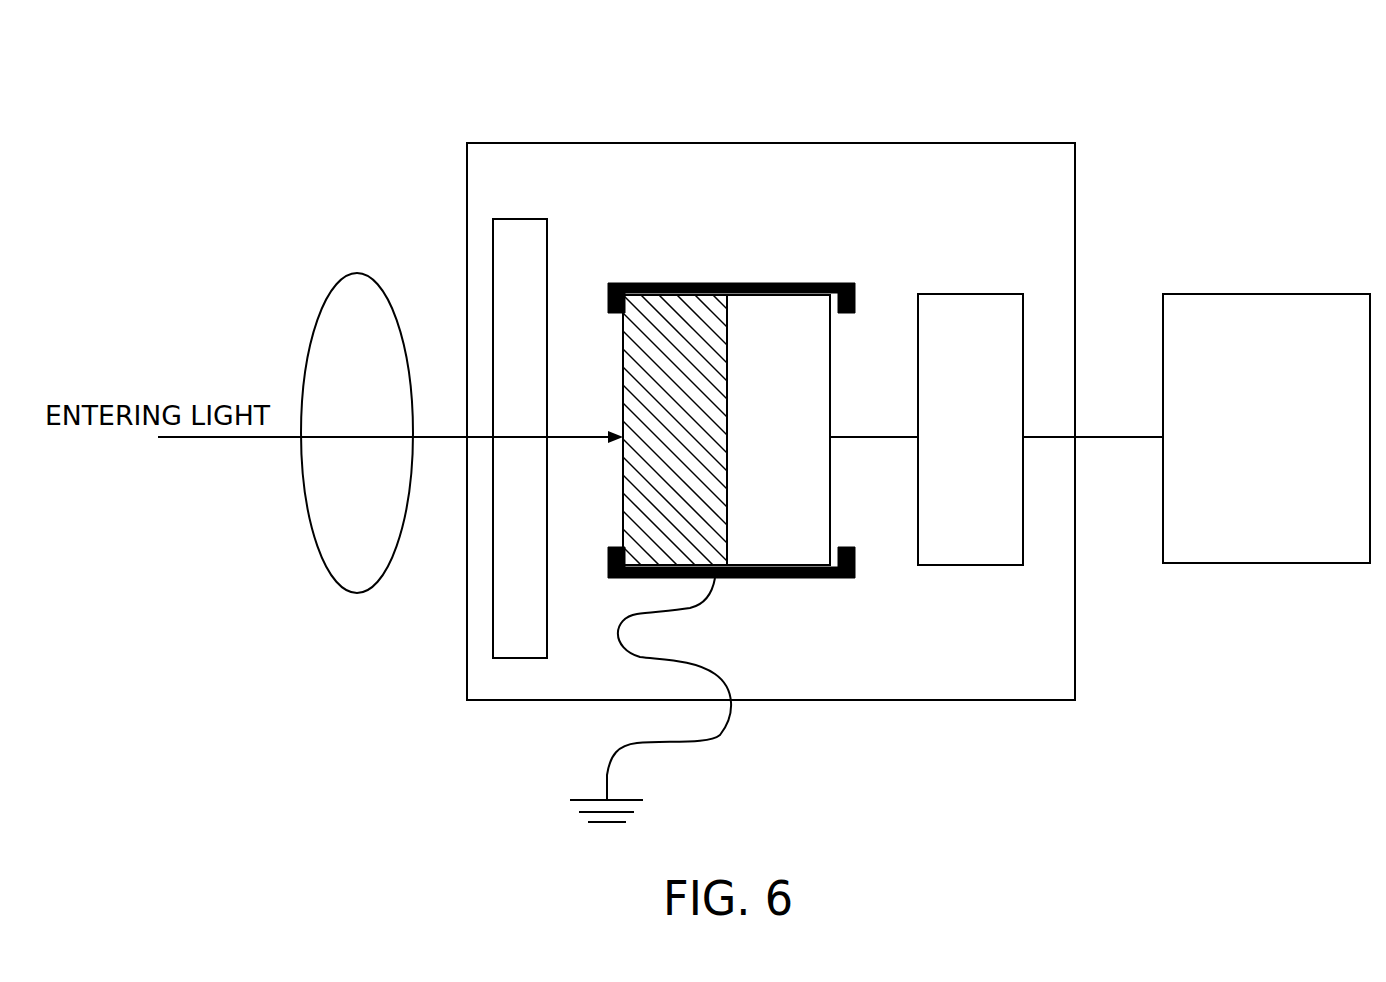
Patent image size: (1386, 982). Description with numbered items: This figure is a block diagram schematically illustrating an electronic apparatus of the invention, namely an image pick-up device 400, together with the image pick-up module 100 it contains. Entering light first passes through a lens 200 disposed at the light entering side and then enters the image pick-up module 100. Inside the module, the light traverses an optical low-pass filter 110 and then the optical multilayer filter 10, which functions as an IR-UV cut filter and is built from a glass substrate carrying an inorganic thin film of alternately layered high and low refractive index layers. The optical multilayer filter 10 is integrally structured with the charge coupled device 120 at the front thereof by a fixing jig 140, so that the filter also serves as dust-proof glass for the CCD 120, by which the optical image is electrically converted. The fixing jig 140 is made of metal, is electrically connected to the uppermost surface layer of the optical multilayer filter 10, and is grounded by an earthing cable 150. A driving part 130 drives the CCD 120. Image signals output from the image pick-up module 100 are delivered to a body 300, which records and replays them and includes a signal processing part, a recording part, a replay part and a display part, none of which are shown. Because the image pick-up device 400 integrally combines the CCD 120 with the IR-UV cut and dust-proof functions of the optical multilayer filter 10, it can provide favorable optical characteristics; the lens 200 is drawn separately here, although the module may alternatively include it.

The optical multilayer filter 10 is at (680, 283).
The image pick-up module 100 is at (1033, 143).
The optical low-pass filter 110 is at (518, 658).
The charge coupled device (CCD) 120 is at (782, 283).
The driving part 130 is at (967, 565).
The fixing jig 140 is at (792, 580).
The earthing cable 150 is at (677, 745).
The lens 200 is at (353, 593).
The body 300 is at (1265, 563).
The image pick-up device 400 is at (987, 94).